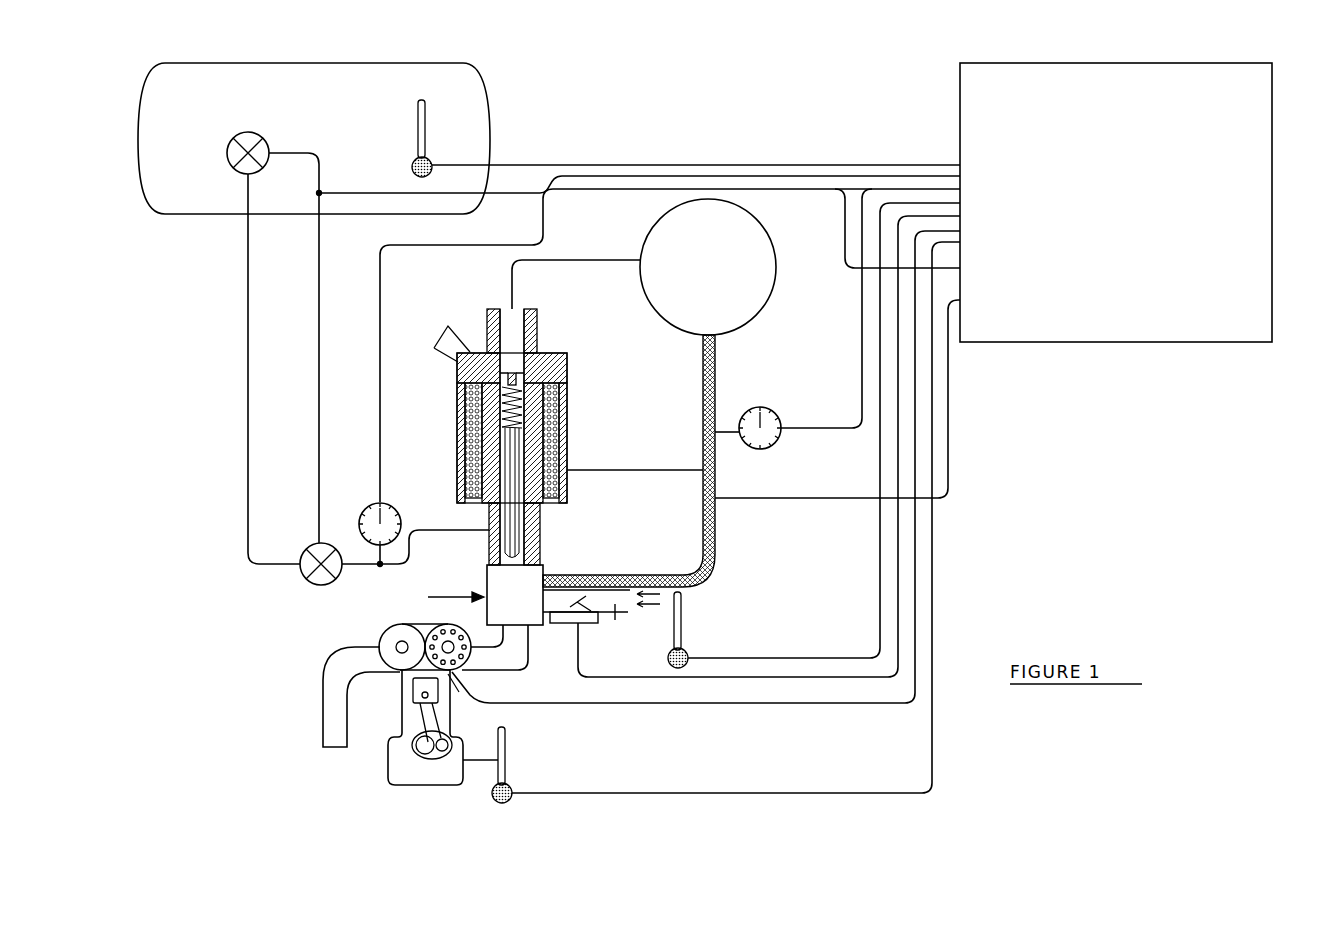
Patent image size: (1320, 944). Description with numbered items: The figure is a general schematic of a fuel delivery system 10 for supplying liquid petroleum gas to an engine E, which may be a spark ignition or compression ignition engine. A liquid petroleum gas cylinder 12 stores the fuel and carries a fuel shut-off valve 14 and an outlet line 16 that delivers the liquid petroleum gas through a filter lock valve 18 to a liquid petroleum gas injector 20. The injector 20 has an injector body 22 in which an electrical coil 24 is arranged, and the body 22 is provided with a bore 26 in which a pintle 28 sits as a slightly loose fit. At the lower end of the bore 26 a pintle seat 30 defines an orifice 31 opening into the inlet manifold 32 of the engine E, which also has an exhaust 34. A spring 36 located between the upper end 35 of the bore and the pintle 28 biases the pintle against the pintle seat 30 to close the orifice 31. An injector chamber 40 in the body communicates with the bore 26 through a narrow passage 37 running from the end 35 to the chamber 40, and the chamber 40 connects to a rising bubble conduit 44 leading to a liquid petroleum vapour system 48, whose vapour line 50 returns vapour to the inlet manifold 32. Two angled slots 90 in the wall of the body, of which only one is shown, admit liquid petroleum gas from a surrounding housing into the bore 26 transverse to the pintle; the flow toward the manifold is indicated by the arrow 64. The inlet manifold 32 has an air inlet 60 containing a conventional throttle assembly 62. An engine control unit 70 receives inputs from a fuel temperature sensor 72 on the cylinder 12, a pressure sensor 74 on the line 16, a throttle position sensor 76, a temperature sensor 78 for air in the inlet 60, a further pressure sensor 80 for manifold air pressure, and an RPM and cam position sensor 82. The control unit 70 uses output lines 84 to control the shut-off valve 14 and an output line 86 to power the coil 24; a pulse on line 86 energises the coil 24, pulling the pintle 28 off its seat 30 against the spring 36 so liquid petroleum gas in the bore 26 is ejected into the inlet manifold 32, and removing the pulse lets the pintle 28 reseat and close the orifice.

The fuel delivery system 10 is at (808, 116).
The liquid petroleum gas cylinder 12 is at (458, 85).
The fuel shut-off valve 14 is at (234, 170).
The outlet line 16 is at (250, 393).
The filter lock valve 18 is at (310, 586).
The liquid petroleum gas injector 20 is at (593, 366).
The injector body 22 is at (580, 368).
The electrical coil 24 is at (568, 450).
The bore 26 is at (543, 533).
The pintle 28 is at (512, 470).
The pintle seat 30 is at (545, 556).
The orifice 31 is at (487, 574).
The inlet manifold 32 is at (503, 606).
The exhaust 34 is at (323, 725).
The upper end 35 is at (455, 335).
The spring 36 is at (472, 386).
The narrow passage 37 is at (567, 378).
The injector chamber 40 is at (511, 339).
The rising bubble conduit 44 is at (587, 278).
The liquid petroleum vapour system 48 is at (693, 284).
The vapour line 50 is at (718, 520).
The air inlet 60 is at (614, 604).
The throttle assembly 62 is at (575, 603).
The fuel flow 64 is at (428, 598).
The engine control unit 70 is at (1098, 203).
The fuel temperature sensor 72 is at (431, 157).
The pressure sensor 74 is at (364, 507).
The throttle position sensor 76 is at (556, 627).
The temperature sensor 78 is at (690, 651).
The pressure sensor 80 is at (776, 410).
The RPM and cam position sensor 82 is at (522, 704).
The output lines 84 is at (668, 185).
The output line 86 is at (950, 443).
The angled slots 90 is at (489, 513).
The engine E is at (402, 718).